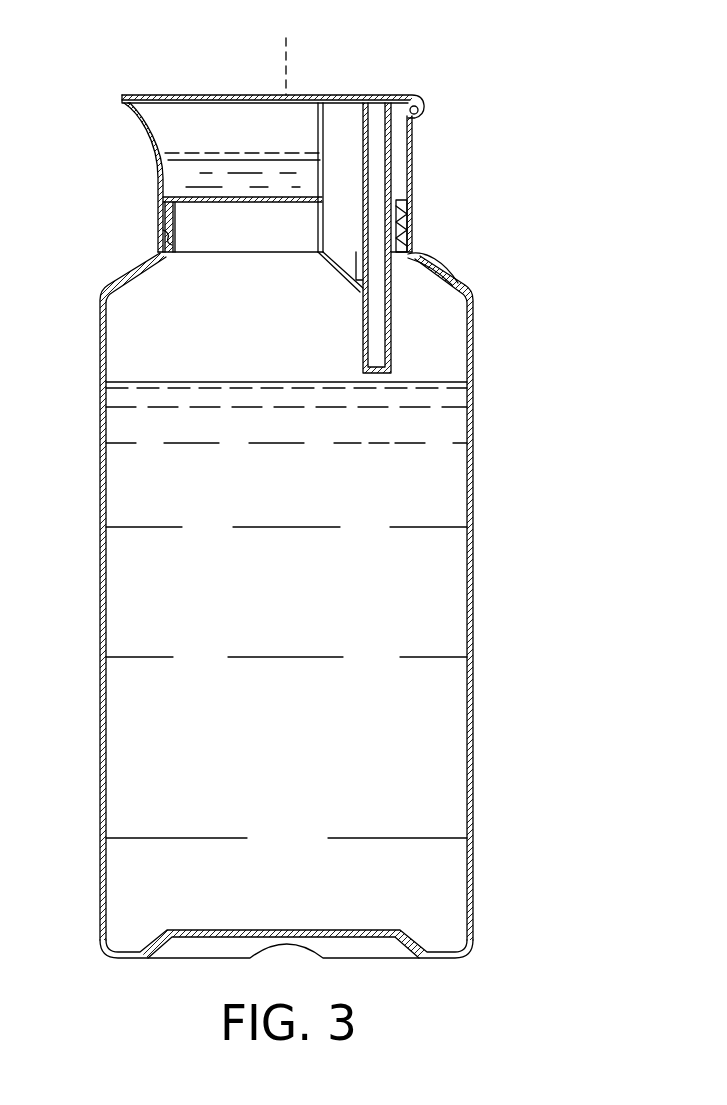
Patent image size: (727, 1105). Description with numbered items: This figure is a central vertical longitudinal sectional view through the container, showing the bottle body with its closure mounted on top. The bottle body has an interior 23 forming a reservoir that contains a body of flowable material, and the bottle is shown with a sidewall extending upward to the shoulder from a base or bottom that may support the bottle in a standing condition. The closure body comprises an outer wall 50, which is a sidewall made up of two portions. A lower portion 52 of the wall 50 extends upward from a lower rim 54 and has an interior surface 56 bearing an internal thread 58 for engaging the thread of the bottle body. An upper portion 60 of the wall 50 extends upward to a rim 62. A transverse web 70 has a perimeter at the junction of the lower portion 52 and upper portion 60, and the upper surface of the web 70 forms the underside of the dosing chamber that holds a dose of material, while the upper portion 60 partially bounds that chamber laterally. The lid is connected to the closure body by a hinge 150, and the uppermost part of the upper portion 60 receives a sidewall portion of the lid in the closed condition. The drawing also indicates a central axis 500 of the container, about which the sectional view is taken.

The interior 23 is at (423, 608).
The lower rim 54 is at (445, 272).
The hinge 150 is at (430, 103).
The outer wall 50 is at (158, 165).
The lower portion 52 is at (163, 205).
The internal thread 58 is at (165, 236).
The transverse web 70 is at (285, 205).
The rim 62 is at (360, 95).
The upper portion 60 is at (413, 158).
The interior surface 56 is at (410, 218).
The central axis 500 is at (285, 70).